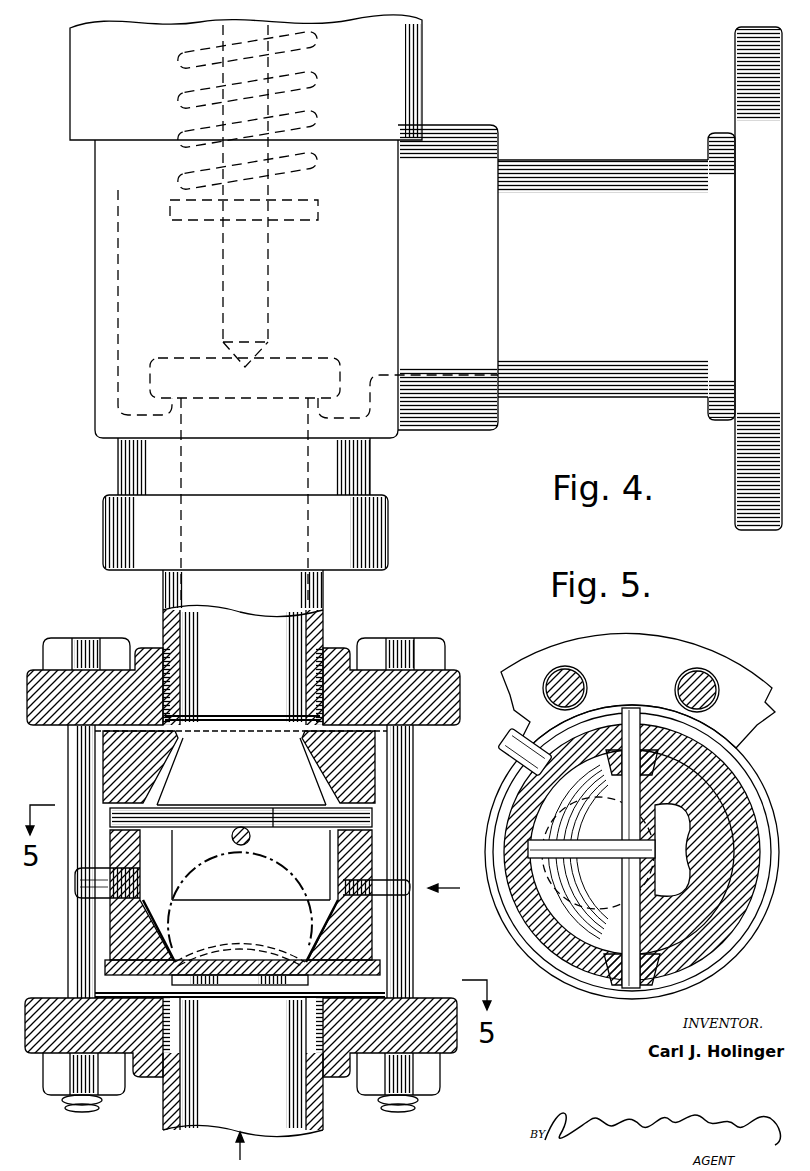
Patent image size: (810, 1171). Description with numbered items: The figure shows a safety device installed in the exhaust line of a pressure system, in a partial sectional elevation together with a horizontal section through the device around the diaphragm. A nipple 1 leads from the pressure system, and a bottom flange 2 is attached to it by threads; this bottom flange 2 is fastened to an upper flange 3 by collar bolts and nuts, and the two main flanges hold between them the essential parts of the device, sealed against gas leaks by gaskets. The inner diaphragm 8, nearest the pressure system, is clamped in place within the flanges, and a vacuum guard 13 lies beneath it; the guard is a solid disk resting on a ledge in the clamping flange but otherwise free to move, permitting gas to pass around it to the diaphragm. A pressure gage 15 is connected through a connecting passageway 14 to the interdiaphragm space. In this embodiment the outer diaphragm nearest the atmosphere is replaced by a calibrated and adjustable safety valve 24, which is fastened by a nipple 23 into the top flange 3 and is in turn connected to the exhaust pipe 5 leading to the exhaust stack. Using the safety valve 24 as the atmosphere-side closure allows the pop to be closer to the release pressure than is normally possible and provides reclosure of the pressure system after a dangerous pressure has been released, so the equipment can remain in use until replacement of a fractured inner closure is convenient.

In FIG. 4, the nipple 1 is at (318, 1112).
In FIG. 4, the bottom flange 2 is at (458, 1047).
In FIG. 5, the bottom flange 2 is at (696, 652).
In FIG. 4, the upper flange 3 is at (458, 690).
In FIG. 4, the pipe 5 is at (595, 172).
In FIG. 4, the inner diaphragm 8 is at (252, 968).
In FIG. 5, the inner diaphragm 8 is at (585, 878).
In FIG. 4, the vacuum guard 13 is at (250, 982).
In FIG. 4, the connecting passageway 14 is at (93, 903).
In FIG. 5, the connecting passageway 14 is at (505, 753).
In FIG. 4, the pressure gage 15 is at (398, 877).
In FIG. 4, the nipple 23 is at (320, 624).
In FIG. 4, the safety valve 24 is at (455, 152).